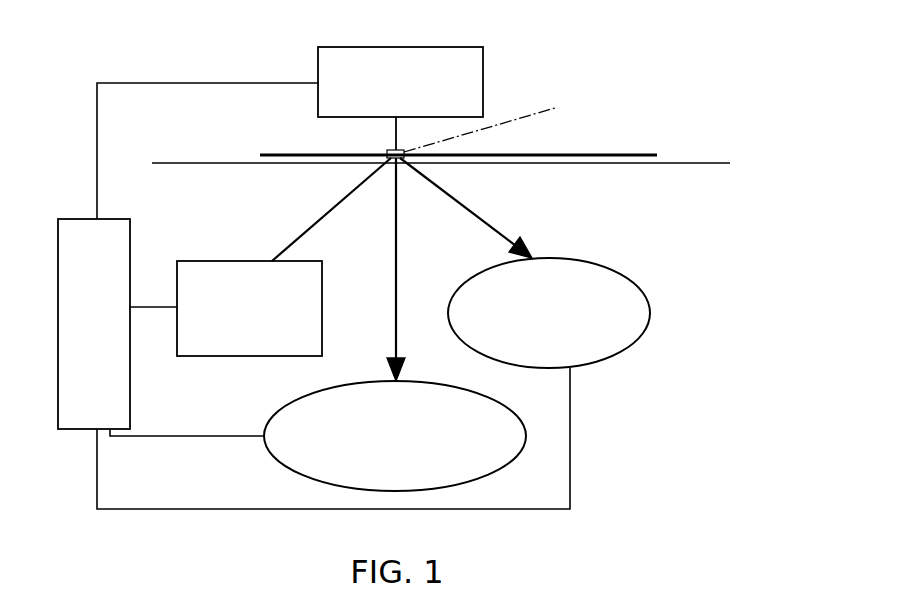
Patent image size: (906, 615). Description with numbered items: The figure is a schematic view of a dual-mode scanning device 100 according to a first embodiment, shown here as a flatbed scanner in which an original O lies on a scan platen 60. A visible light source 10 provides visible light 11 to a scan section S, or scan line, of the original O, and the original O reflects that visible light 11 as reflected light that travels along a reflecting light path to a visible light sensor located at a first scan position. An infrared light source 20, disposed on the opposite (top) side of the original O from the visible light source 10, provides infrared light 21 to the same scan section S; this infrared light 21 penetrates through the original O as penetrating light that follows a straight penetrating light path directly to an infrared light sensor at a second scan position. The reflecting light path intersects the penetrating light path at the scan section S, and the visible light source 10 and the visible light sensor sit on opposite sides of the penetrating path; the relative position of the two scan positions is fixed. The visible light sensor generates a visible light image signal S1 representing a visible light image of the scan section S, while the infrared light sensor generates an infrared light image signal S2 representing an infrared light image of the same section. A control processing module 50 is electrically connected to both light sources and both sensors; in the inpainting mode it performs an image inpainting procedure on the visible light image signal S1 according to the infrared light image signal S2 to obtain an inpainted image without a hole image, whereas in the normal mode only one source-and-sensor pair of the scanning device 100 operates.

The dual-mode scanning device 100 is at (396, 10).
The infrared light source 20 is at (483, 61).
The infrared light 21 is at (387, 151).
The original O is at (580, 155).
The scan platen 60 is at (688, 162).
The scan section S is at (496, 120).
The visible light source 10 is at (196, 268).
The visible light 11 is at (322, 218).
The control processing module 50 is at (68, 225).
The visible light image signal S1 is at (240, 503).
The infrared light image signal S2 is at (207, 430).